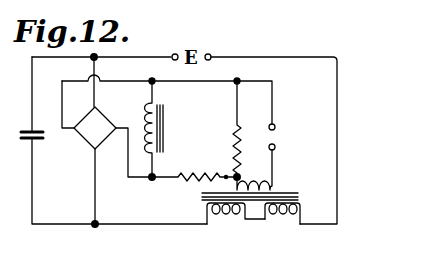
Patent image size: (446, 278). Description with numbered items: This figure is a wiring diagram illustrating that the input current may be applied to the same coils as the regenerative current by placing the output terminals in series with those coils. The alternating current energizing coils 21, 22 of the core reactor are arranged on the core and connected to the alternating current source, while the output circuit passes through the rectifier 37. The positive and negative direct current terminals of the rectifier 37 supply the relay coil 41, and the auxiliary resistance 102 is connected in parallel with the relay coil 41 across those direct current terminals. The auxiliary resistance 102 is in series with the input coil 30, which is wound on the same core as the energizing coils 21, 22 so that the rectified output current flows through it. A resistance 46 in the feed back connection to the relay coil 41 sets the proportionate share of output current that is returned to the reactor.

The rectifier 37 is at (110, 123).
The relay coil 41 is at (163, 105).
The resistance 46 is at (212, 174).
The auxiliary resistance 102 is at (241, 138).
The input coil 30 is at (253, 186).
The alternating current energizing coil 22 is at (224, 219).
The alternating current energizing coil 21 is at (285, 219).